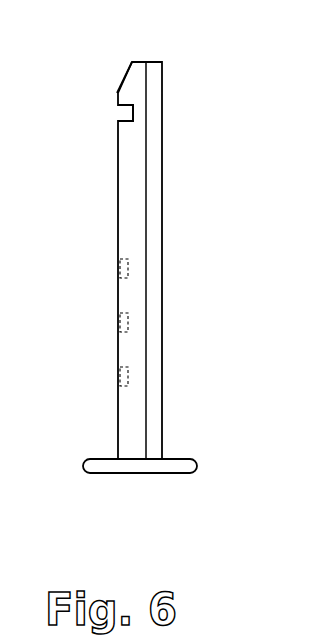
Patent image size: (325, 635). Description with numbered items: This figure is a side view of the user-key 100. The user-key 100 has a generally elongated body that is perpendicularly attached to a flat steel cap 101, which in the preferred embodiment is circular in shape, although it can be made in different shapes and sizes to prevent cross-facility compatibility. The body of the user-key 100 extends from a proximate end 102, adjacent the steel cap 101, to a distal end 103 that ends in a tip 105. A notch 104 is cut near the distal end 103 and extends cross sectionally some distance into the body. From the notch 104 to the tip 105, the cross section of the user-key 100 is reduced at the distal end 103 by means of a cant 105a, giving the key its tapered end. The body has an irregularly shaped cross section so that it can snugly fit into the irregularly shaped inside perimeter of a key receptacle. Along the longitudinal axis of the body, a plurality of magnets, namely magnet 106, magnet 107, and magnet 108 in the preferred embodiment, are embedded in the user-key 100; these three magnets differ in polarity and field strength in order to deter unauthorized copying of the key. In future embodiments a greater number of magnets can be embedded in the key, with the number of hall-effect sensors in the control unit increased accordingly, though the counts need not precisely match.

The user-key 100 is at (160, 293).
The steel cap 101 is at (83, 467).
The proximate end 102 is at (172, 403).
The distal end 103 is at (160, 239).
The notch 104 is at (123, 108).
The tip 105 is at (140, 60).
The cant 105a is at (123, 78).
The magnet 106 is at (118, 383).
The magnet 107 is at (118, 330).
The magnet 108 is at (118, 273).